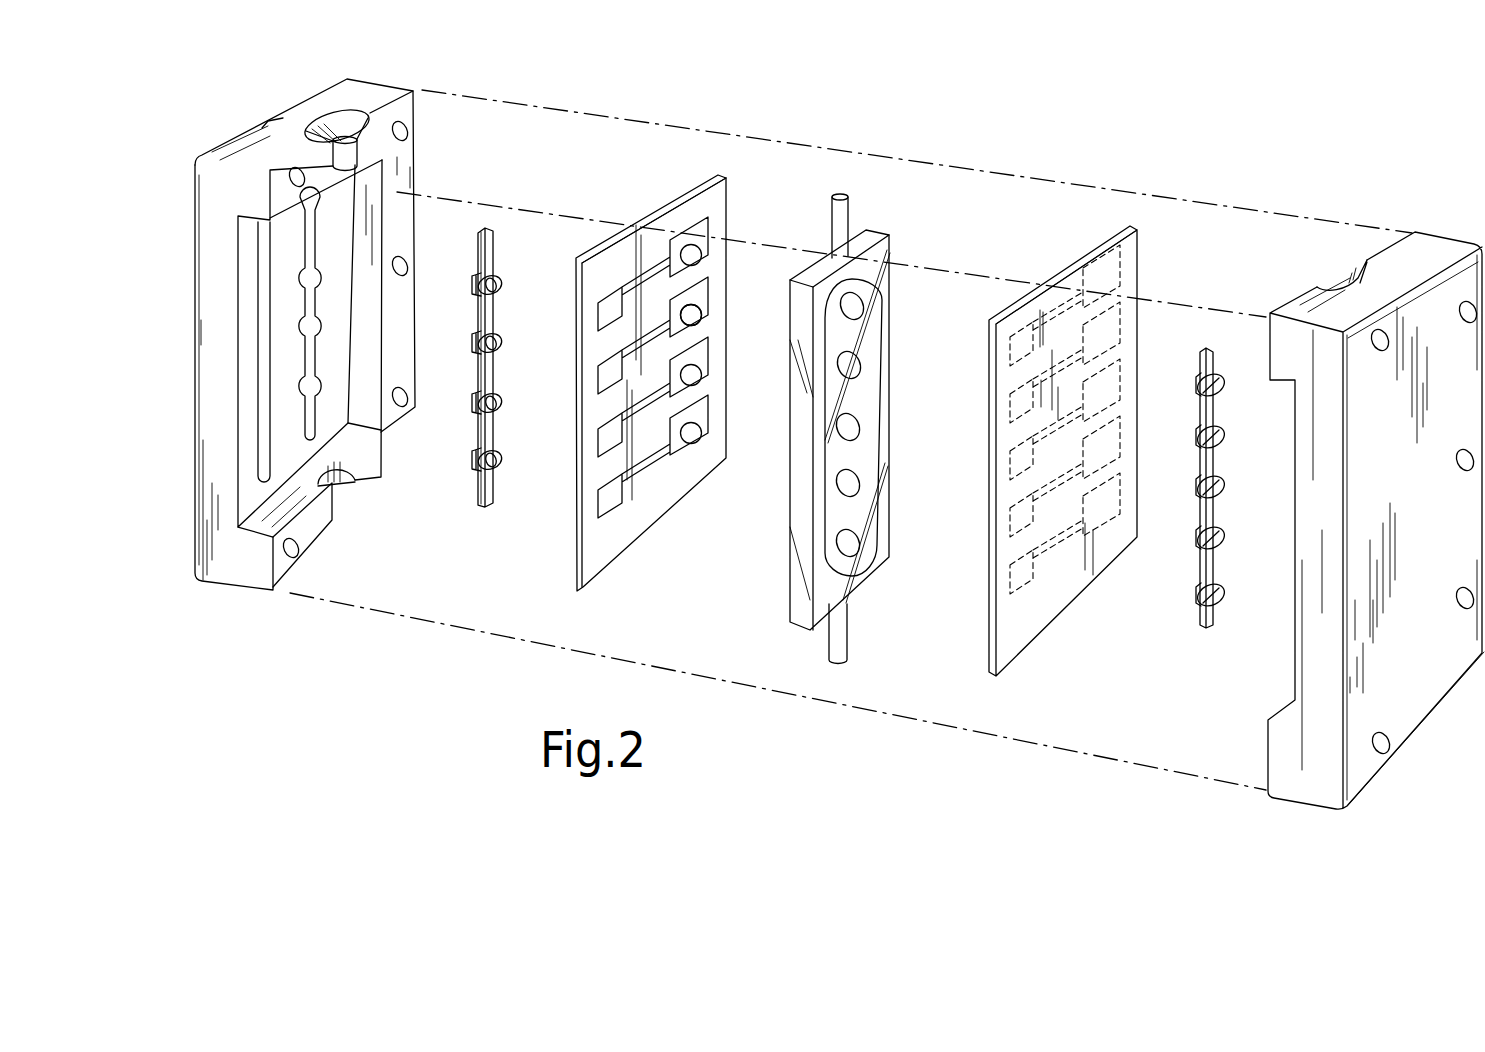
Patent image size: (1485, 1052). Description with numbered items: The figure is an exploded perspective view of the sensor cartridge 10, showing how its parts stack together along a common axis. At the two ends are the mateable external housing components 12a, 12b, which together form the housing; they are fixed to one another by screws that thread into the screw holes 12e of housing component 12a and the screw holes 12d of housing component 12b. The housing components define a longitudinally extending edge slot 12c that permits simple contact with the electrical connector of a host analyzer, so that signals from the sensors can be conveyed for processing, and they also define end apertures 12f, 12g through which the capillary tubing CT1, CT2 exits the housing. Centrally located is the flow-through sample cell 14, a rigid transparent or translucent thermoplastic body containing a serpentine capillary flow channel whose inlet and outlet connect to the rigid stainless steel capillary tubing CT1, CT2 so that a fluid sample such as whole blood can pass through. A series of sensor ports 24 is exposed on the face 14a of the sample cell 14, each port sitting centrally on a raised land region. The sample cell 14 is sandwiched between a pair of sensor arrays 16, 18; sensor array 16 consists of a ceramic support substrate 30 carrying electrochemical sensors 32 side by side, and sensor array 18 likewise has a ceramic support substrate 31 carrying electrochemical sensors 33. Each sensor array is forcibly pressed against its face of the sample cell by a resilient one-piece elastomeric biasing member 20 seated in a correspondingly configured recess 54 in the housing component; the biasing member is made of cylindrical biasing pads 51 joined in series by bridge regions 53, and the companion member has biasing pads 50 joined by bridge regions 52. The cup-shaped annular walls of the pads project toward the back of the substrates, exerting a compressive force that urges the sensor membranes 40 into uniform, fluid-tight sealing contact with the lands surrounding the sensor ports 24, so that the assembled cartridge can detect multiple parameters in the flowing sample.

The sensor cartridge 10 is at (1126, 154).
The housing component 12a is at (360, 88).
The housing component 12b is at (1402, 694).
The edge slot 12c is at (247, 362).
The screw holes 12d is at (1379, 350).
The screw holes 12e is at (437, 113).
The end aperture 12f is at (338, 475).
The end aperture 12g is at (333, 111).
The flow-through sample cell 14 is at (896, 218).
The face of sample cell 14a is at (886, 549).
The sensor array 16 is at (562, 586).
The sensor array 18 is at (1067, 622).
The biasing member 20 is at (462, 505).
The sensor ports 24 is at (852, 368).
The ceramic support substrate 30 is at (722, 176).
The ceramic support substrate 31 is at (1131, 258).
The electrochemical sensors 32 is at (703, 315).
The electrochemical sensors 33 is at (1121, 336).
The membranes 40 is at (702, 251).
The biasing pads 50 is at (1225, 433).
The biasing pads 51 is at (505, 285).
The bridge regions 52 is at (1203, 483).
The bridge regions 53 is at (478, 375).
The recess 54 is at (305, 224).
The capillary tubing CT1 is at (830, 640).
The capillary tubing CT2 is at (830, 187).